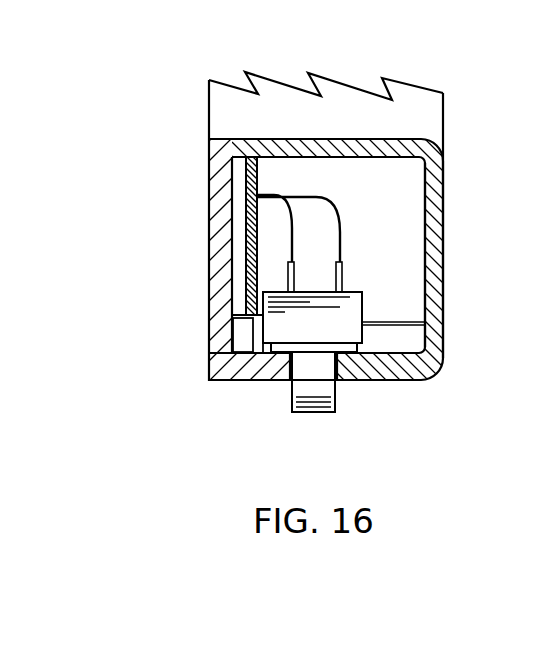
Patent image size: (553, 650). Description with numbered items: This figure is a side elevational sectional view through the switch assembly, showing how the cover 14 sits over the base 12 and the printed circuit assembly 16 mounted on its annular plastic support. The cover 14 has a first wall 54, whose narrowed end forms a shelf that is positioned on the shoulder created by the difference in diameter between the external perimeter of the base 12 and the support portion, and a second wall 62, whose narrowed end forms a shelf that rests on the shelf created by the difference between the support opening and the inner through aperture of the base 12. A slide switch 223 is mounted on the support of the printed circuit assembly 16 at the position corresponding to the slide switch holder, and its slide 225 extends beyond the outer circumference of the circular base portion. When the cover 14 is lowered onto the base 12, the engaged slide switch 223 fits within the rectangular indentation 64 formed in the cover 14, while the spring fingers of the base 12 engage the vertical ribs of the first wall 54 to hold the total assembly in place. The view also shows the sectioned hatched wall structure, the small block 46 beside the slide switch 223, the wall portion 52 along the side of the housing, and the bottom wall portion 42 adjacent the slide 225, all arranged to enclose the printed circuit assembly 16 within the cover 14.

The base 12 is at (203, 256).
The cover 14 is at (449, 177).
The printed circuit assembly 16 is at (240, 212).
The bottom wall left portion 42 is at (288, 382).
The block 46 is at (242, 337).
The right housing wall 52 is at (445, 275).
The first wall 54 is at (408, 378).
The second wall 62 is at (370, 138).
The rectangular indentation 64 is at (337, 380).
The slide switch 223 is at (353, 328).
The slide 225 is at (310, 403).